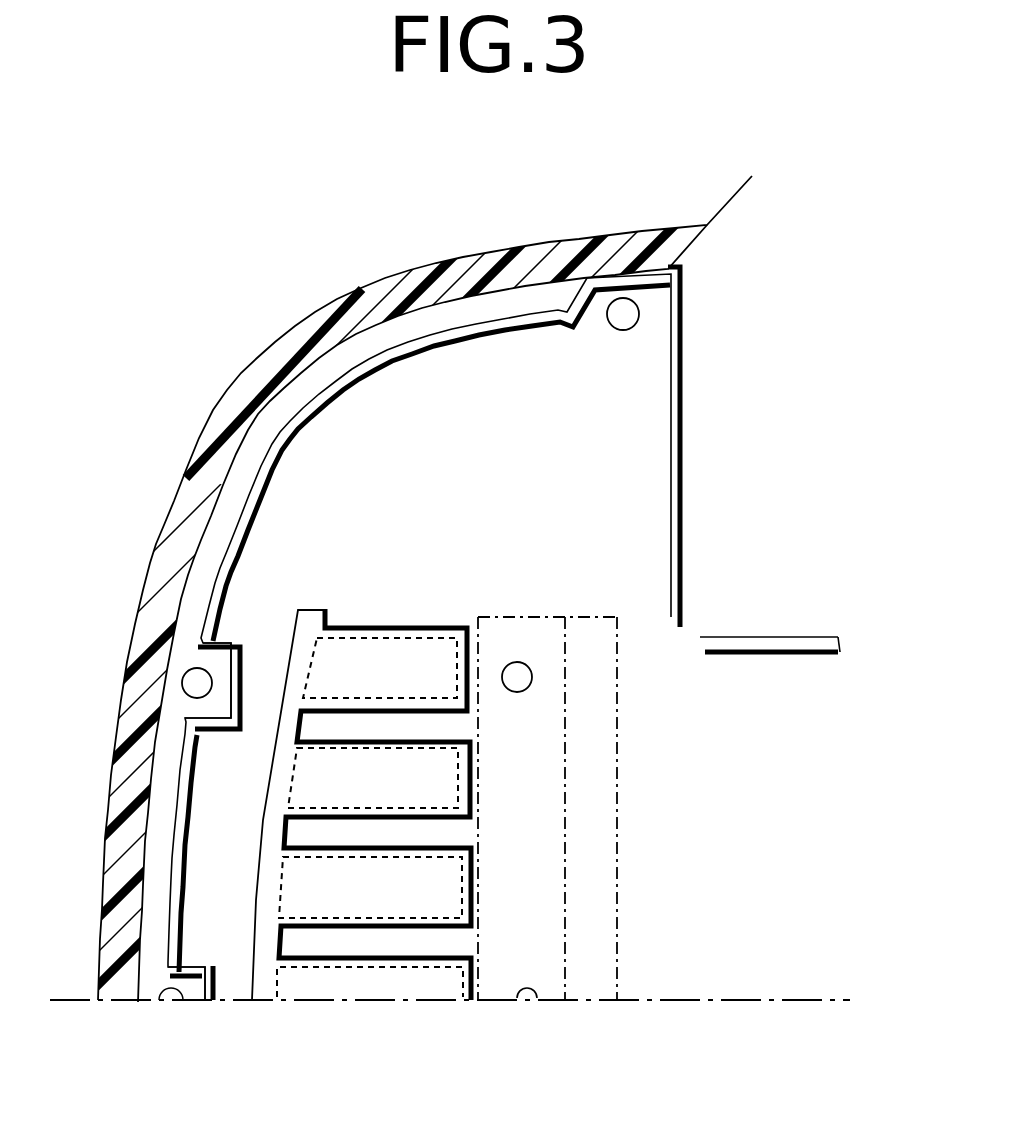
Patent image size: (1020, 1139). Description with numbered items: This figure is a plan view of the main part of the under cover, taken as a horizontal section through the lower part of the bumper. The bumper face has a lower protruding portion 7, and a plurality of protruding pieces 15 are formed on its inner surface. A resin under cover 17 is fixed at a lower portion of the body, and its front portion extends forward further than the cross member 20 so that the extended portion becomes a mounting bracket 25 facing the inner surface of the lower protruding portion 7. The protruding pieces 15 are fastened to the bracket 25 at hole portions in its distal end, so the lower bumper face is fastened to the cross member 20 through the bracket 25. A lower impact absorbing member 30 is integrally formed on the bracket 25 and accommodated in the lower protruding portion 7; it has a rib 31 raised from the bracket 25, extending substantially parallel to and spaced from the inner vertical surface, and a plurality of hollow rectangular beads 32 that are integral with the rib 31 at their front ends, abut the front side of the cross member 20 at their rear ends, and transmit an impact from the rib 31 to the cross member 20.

The lower protruding portion 7 is at (377, 290).
The mounting bracket 25 is at (527, 347).
The protruding pieces 15 is at (215, 662).
The under cover 17 is at (800, 597).
The cross member 20 is at (618, 782).
The lower impact absorbing member 30 is at (358, 783).
The rib 31 is at (267, 1003).
The beads 32 is at (422, 627).